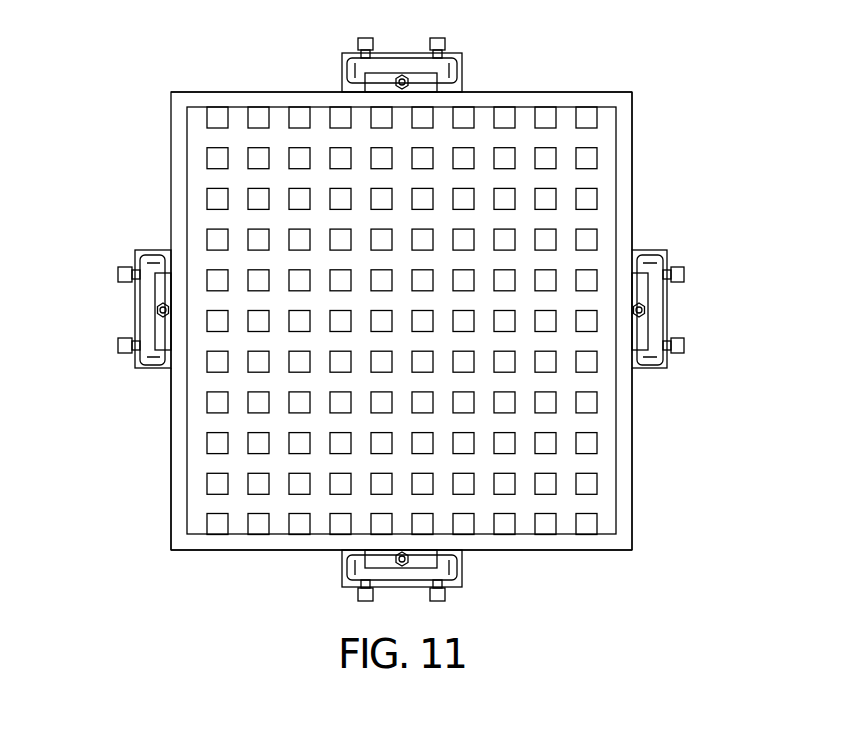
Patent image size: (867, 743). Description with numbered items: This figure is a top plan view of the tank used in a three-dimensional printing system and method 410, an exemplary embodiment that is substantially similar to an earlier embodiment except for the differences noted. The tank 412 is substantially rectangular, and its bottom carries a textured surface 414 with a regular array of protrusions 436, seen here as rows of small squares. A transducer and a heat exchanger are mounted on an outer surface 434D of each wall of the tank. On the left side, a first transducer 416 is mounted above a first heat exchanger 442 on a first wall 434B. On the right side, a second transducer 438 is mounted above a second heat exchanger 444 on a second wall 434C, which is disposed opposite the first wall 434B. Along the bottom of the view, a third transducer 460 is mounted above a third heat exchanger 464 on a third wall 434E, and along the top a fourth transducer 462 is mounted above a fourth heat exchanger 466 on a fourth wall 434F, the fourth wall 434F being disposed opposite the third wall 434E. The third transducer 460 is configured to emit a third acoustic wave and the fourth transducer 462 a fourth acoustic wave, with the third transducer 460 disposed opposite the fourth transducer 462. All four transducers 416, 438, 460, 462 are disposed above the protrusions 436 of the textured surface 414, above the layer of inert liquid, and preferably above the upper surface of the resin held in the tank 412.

The 3D printing system and method 410 is at (117, 193).
The tank 412 is at (634, 158).
The textured surface 414 is at (233, 502).
The first transducer 416 is at (118, 299).
The protrusions 436 is at (258, 158).
The second transducer 438 is at (686, 299).
The first heat exchanger 442 is at (135, 300).
The second heat exchanger 444 is at (667, 300).
The third transducer 460 is at (386, 568).
The fourth transducer 462 is at (383, 73).
The third heat exchanger 464 is at (439, 590).
The fourth heat exchanger 466 is at (439, 50).
The first wall 434B is at (171, 425).
The second wall 434C is at (633, 207).
The outer surface 434D is at (633, 486).
The third wall 434E is at (242, 550).
The fourth wall 434F is at (582, 92).